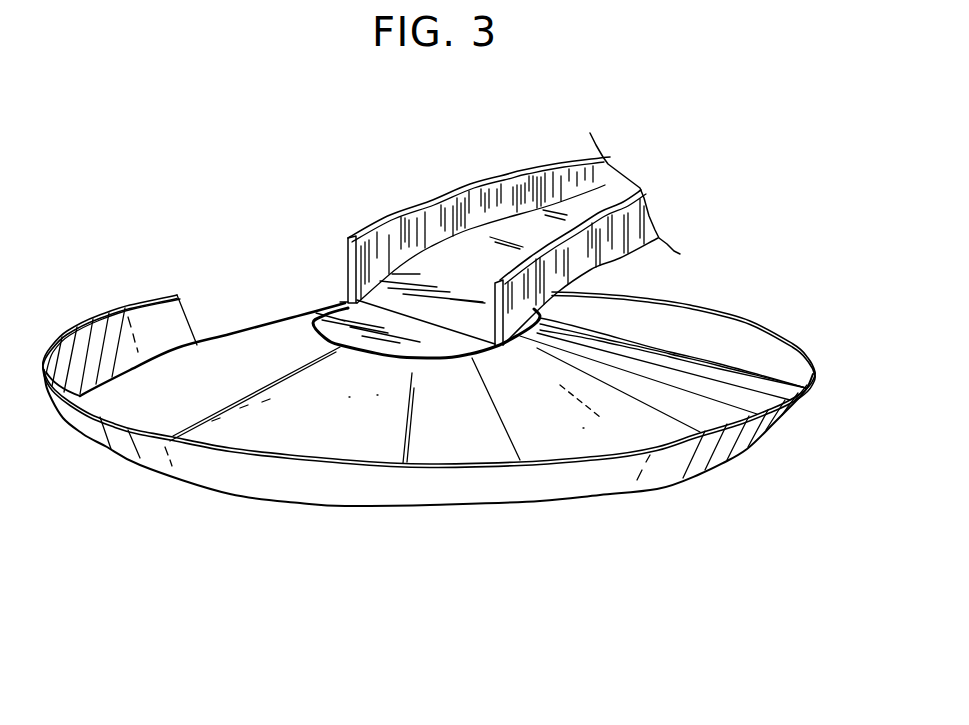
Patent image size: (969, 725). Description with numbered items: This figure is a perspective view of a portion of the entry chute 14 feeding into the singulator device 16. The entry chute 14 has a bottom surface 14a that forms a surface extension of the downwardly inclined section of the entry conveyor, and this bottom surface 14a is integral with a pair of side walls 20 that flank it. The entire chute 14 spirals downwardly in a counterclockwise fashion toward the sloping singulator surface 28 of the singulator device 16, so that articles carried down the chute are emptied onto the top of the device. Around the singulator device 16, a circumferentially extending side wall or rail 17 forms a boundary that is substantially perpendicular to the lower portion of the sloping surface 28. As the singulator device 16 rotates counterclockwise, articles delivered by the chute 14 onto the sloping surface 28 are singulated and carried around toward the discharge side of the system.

The entry chute 14 is at (620, 251).
The bottom surface 14a is at (483, 273).
The singulator device 16 is at (270, 314).
The side wall or rail 17 is at (793, 343).
The side walls 20 is at (460, 186).
The sloping singulator surface 28 is at (467, 426).